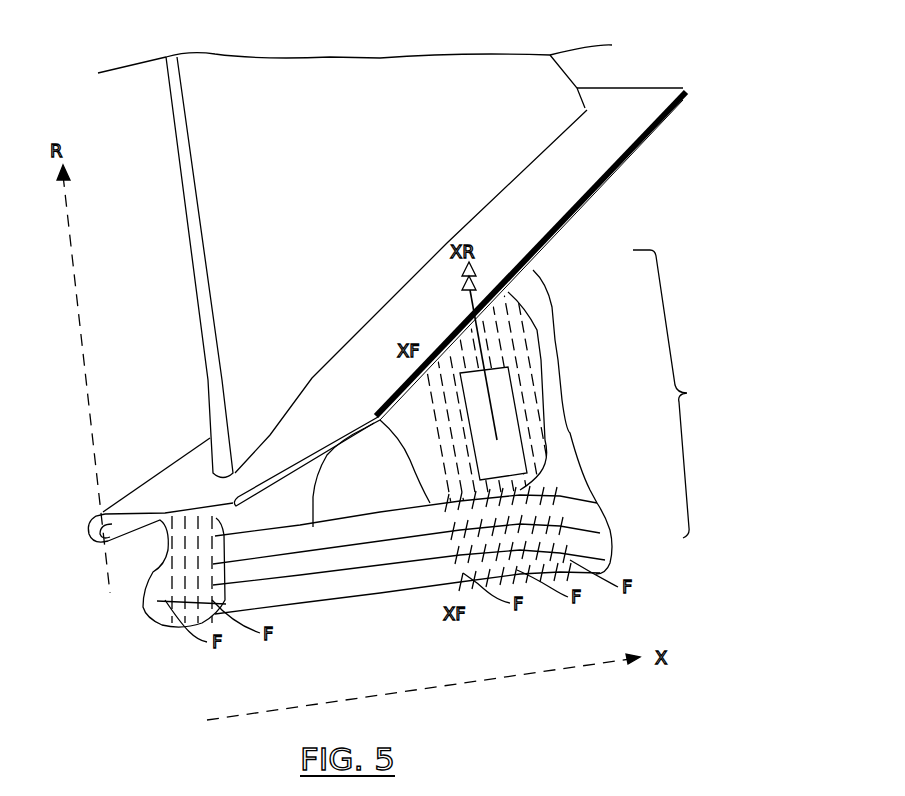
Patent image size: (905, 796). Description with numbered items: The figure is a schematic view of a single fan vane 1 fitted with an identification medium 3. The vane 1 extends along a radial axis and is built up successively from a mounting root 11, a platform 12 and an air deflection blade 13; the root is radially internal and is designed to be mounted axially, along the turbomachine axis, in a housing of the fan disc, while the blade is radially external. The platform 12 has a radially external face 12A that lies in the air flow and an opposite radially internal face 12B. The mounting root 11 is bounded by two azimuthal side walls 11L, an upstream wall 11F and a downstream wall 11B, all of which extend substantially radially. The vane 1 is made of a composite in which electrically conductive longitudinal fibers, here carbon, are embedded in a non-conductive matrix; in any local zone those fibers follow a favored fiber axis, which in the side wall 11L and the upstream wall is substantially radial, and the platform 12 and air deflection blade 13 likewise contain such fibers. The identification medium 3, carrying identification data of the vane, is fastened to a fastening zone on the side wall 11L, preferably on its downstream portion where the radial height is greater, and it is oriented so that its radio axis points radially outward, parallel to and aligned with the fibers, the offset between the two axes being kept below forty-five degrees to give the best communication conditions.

The vane 1 is at (740, 268).
The identification medium 3 is at (510, 415).
The mounting root 11 is at (679, 394).
The downstream wall 11B is at (593, 481).
The upstream wall 11F is at (136, 604).
The side wall 11L is at (358, 527).
The platform 12 is at (668, 90).
The radially external face 12A is at (608, 130).
The radially internal face 12B is at (647, 143).
The air deflection blade 13 is at (300, 174).